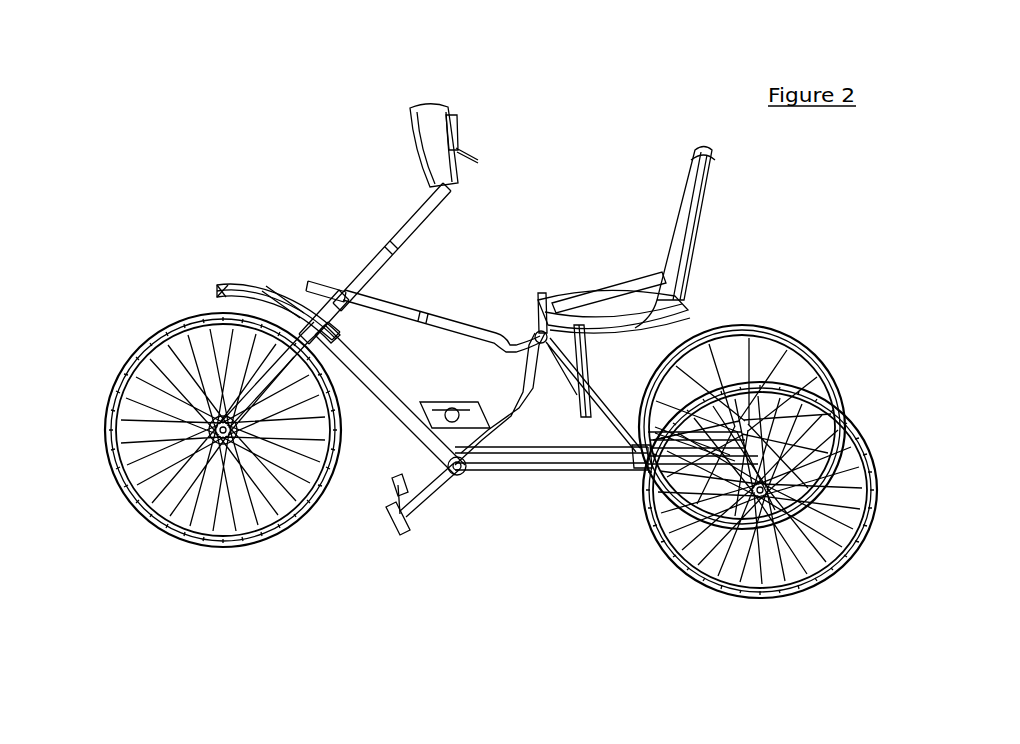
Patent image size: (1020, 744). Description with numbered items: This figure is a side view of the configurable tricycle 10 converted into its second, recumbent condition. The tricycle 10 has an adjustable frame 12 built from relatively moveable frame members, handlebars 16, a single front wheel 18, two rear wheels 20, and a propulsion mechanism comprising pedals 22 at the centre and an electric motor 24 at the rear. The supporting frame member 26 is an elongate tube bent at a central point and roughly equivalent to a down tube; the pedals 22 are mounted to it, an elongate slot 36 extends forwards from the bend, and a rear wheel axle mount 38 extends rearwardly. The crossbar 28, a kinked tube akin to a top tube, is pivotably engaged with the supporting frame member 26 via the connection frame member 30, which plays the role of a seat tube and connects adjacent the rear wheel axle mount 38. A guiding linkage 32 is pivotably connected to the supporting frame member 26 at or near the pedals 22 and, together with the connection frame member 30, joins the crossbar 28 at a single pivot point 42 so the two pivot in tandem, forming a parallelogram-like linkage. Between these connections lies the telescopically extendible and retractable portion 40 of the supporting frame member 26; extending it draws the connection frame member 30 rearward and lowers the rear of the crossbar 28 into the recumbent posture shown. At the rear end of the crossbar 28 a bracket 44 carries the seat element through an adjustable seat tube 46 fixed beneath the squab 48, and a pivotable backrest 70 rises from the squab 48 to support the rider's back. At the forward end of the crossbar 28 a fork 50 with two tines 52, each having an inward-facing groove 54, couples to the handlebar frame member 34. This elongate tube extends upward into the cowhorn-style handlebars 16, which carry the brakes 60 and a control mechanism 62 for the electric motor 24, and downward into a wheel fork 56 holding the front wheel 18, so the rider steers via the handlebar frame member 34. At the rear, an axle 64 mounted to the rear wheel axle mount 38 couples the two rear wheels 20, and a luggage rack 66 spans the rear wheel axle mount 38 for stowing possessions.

The tricycle 10 is at (150, 217).
The adjustable frame 12 is at (210, 286).
The handlebars 16 is at (702, 217).
The front wheel 18 is at (128, 500).
The rear wheels 20 is at (795, 328).
The pedals 22 is at (400, 530).
The electric motor 24 is at (743, 598).
The supporting frame member 26 is at (372, 410).
The crossbar 28 is at (440, 322).
The connection frame member 30 is at (625, 457).
The guiding linkage 32 is at (521, 460).
The handlebar frame member 34 is at (402, 247).
The elongate slot 36 is at (282, 298).
The rear wheel axle mount 38 is at (640, 480).
The telescopically extendible and retractable portion 40 is at (556, 466).
The pivot point 42 is at (538, 335).
The bracket 44 is at (702, 305).
The adjustable seat tube 46 is at (596, 380).
The squab 48 is at (612, 285).
The fork 50 is at (323, 290).
The tines 52 is at (305, 290).
The groove 54 is at (347, 326).
The wheel fork 56 is at (235, 400).
The brakes 60 is at (410, 104).
The control mechanism 62 is at (452, 112).
The axle 64 is at (868, 530).
The luggage rack 66 is at (827, 373).
The backrest 70 is at (718, 162).